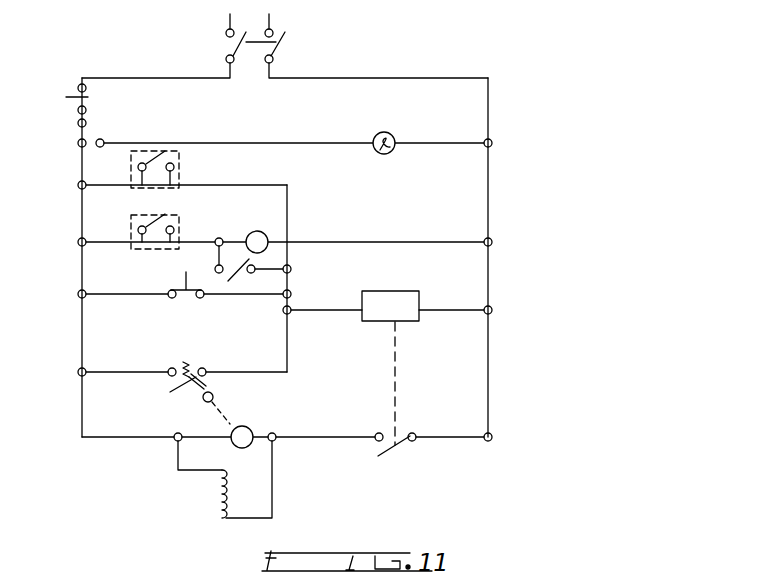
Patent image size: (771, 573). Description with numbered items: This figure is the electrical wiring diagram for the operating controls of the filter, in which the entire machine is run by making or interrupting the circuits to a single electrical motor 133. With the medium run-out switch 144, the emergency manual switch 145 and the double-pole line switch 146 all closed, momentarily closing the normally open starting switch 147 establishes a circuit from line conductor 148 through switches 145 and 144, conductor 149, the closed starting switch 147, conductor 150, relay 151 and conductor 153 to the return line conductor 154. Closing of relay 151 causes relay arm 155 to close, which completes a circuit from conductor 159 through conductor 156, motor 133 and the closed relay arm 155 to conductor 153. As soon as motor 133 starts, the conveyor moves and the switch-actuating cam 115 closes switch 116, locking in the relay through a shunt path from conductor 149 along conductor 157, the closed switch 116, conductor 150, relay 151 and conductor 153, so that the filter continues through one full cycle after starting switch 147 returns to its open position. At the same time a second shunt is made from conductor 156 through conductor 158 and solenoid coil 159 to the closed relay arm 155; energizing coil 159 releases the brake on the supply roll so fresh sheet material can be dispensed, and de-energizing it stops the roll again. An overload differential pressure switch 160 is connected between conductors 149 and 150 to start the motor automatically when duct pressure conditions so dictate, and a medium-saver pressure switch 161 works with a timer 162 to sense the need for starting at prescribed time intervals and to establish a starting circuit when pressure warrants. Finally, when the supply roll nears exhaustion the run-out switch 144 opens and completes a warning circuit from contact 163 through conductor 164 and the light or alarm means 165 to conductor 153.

The switch-actuating cam 115 is at (213, 392).
The cam-follower switch 116 is at (184, 384).
The electrical motor 133 is at (252, 430).
The medium run-out switch 144 is at (96, 135).
The emergency manual switch 145 is at (87, 97).
The double-pole line switch 146 is at (276, 50).
The starting switch 147 is at (186, 300).
The line conductor 148 is at (228, 27).
The conductor 149 is at (82, 267).
The conductor 150 is at (289, 200).
The relay 151 is at (387, 298).
The conductor 153 is at (490, 222).
The return line conductor 154 is at (270, 26).
The relay arm 155 is at (400, 447).
The conductor 156 is at (95, 441).
The conductor 157 is at (118, 370).
The conductor 158 is at (200, 475).
The solenoid coil 159 is at (242, 478).
The overload differential pressure switch 160 is at (181, 160).
The medium-saver pressure switch 161 is at (180, 217).
The timer 162 is at (253, 231).
The contact 163 is at (100, 148).
The conductor 164 is at (285, 143).
The light or alarm means 165 is at (390, 152).